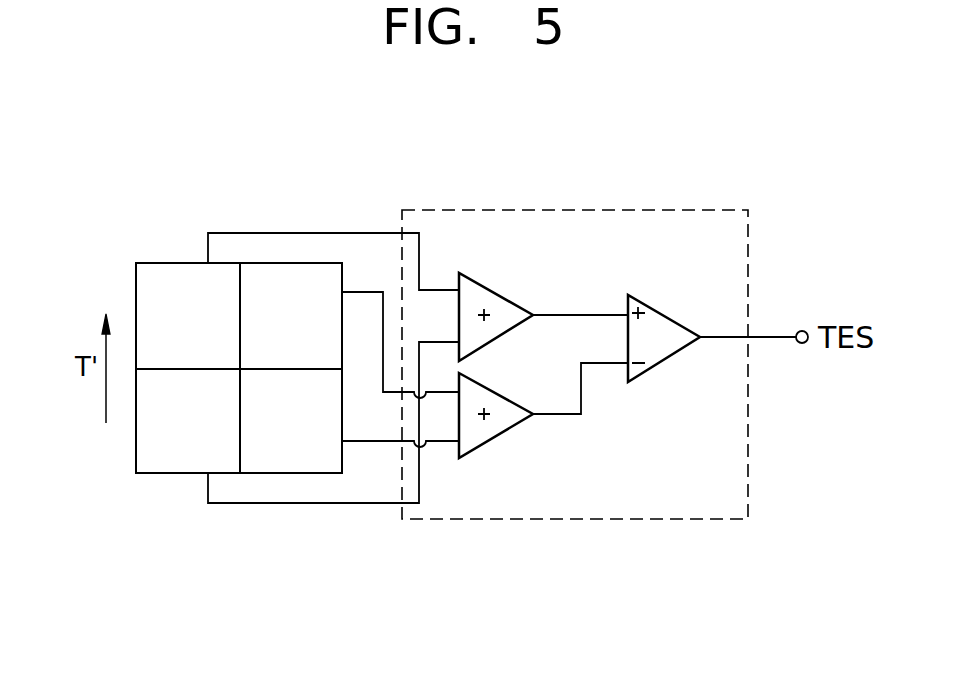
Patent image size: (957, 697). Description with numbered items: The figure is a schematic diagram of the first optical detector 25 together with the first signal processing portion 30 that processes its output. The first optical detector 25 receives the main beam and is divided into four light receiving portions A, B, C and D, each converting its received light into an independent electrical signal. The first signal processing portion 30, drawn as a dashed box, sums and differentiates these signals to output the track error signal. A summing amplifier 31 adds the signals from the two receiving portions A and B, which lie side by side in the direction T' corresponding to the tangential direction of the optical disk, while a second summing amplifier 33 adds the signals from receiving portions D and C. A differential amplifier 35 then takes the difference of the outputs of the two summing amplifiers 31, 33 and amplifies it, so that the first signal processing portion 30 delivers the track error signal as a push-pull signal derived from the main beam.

The first optical detector 25 is at (127, 257).
The first signal processing portion 30 is at (760, 212).
The summing amplifier 31 is at (495, 292).
The summing amplifier 33 is at (497, 437).
The differential amplifier 35 is at (665, 313).